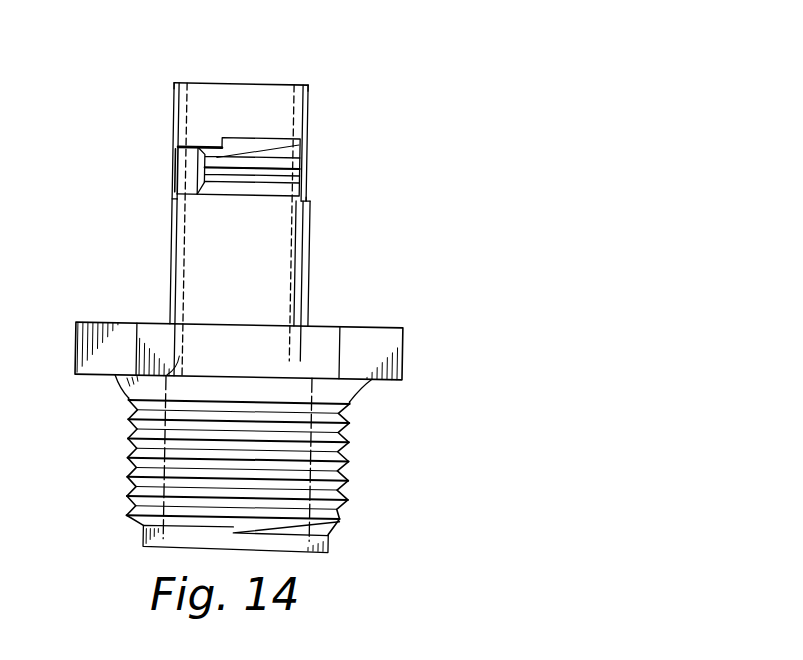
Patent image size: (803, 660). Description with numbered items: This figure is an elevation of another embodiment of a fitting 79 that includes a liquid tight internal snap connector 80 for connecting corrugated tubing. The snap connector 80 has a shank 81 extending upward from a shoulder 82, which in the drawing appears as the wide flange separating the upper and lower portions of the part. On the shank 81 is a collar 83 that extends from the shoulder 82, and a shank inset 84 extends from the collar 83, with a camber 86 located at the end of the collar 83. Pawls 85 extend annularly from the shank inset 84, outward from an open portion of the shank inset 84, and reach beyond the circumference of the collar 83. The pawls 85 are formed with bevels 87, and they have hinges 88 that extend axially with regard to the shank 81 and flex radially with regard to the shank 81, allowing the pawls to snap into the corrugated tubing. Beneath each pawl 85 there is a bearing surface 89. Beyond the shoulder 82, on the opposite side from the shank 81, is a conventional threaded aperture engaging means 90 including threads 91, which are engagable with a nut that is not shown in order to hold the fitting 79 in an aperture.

The fitting 79 is at (403, 316).
The liquid tight internal snap connector 80 is at (308, 152).
The shank 81 is at (242, 100).
The shoulder 82 is at (340, 327).
The collar 83 is at (307, 230).
The shank inset 84 is at (307, 112).
The pawls 85 is at (203, 178).
The camber 86 is at (306, 205).
The bevels 87 is at (190, 147).
The hinges 88 is at (180, 172).
The bearing surfaces 89 is at (215, 172).
The threaded aperture engaging means 90 is at (350, 465).
The threads 91 is at (343, 513).